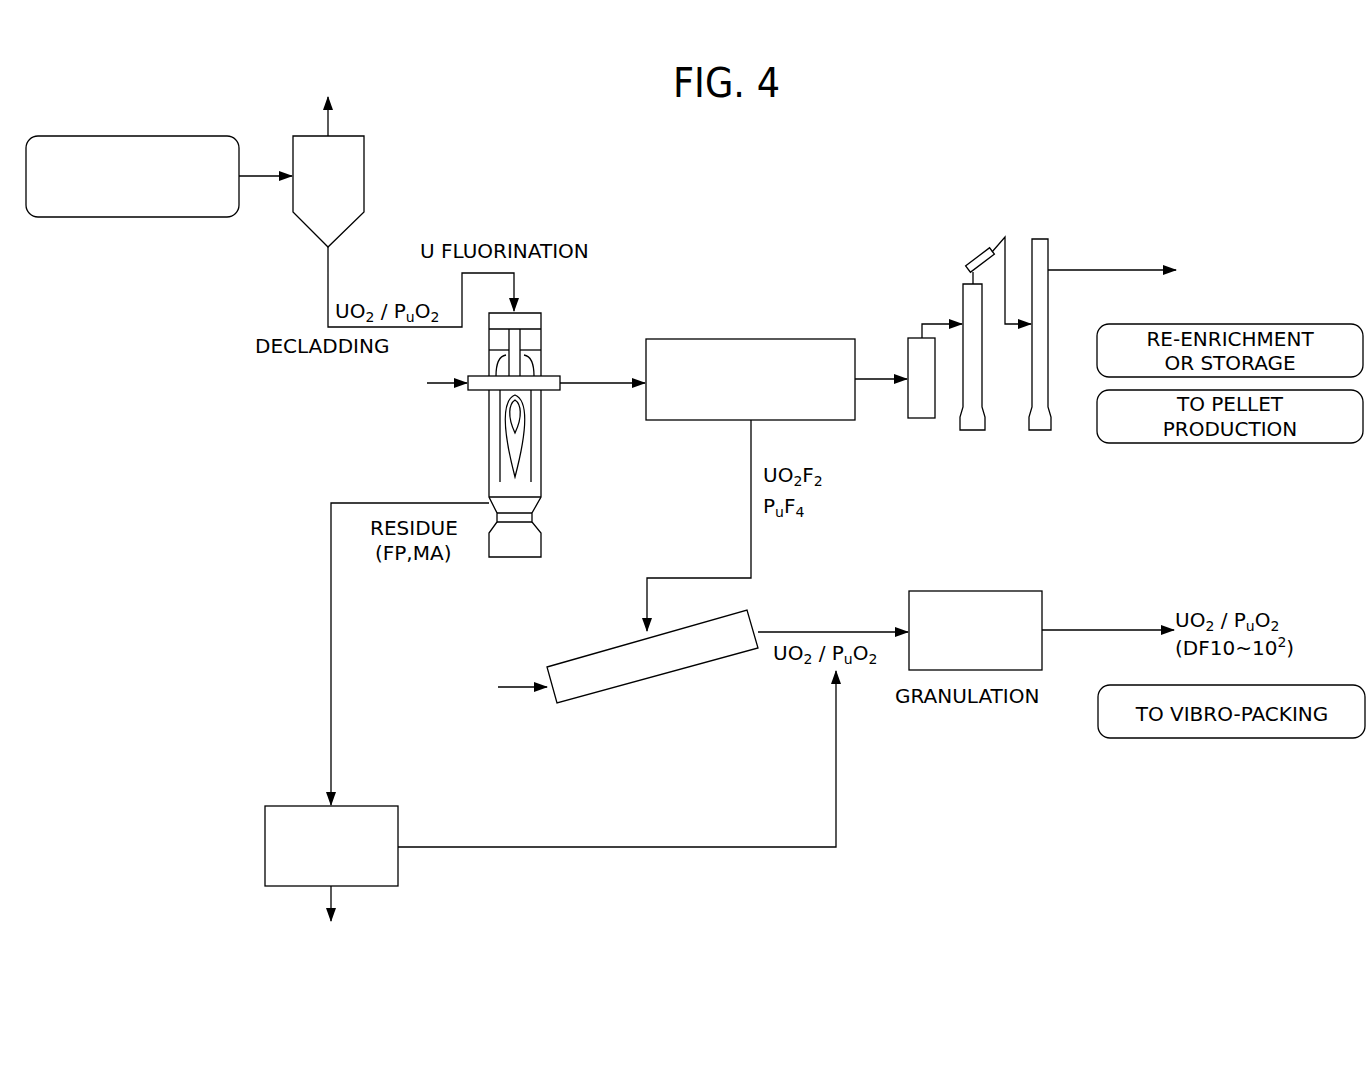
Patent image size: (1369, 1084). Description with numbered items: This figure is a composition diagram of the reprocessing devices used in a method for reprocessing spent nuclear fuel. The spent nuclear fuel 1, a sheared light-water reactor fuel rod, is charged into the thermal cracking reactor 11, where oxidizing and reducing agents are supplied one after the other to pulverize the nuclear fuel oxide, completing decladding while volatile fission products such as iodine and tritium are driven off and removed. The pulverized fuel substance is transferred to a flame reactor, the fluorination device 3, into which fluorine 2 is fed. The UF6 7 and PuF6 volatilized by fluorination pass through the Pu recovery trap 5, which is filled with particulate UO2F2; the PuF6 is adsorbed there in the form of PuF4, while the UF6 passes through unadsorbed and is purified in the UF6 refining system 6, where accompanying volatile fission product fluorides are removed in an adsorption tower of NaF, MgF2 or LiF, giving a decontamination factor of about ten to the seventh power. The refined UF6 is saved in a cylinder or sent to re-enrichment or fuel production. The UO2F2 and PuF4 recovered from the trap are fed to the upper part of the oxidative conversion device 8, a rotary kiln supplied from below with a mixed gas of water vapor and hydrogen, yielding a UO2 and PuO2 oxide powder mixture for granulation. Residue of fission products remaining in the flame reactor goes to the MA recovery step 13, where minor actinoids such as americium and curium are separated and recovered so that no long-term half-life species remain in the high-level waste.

The spent nuclear fuel 1 is at (130, 217).
The thermal cracking reactor 11 is at (364, 171).
The fluorine 2 is at (390, 388).
The fluorination device 3 is at (541, 451).
The UF6 7 is at (600, 346).
The Pu recovery trap 5 is at (843, 339).
The UF6 refining system 6 is at (980, 243).
The oxidative conversion device 8 is at (608, 695).
The MA recovery step 13 is at (285, 806).